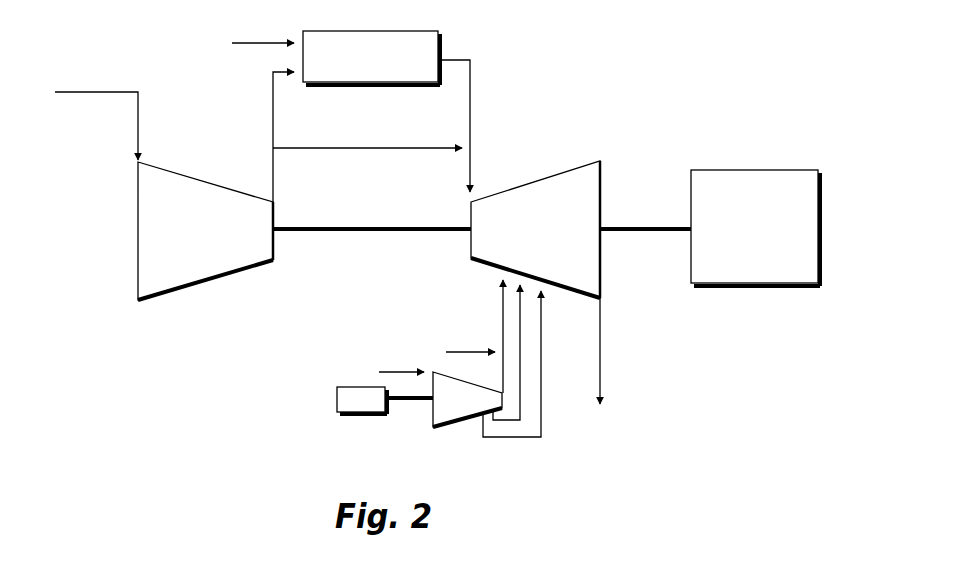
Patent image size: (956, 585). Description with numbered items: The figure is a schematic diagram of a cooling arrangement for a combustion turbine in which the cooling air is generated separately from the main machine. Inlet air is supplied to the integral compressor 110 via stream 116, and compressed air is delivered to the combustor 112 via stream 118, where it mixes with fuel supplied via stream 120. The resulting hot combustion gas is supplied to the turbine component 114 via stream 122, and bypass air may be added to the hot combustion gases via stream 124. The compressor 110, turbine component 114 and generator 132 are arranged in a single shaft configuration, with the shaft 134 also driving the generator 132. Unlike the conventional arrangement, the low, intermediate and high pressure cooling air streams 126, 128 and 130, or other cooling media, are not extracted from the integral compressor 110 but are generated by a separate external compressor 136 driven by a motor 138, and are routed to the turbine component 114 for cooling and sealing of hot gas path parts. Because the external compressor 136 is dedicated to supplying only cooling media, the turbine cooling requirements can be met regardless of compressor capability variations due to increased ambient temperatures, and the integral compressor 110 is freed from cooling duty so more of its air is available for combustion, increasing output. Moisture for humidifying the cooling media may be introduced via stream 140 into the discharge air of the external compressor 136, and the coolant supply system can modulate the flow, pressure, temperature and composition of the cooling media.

The compressor 110 is at (200, 185).
The combustor 112 is at (385, 31).
The turbine component 114 is at (537, 192).
The inlet air stream 116 is at (140, 109).
The compressed air stream 118 is at (273, 188).
The fuel stream 120 is at (263, 42).
The hot combustion gas stream 122 is at (470, 112).
The bypass air stream 124 is at (325, 147).
The low pressure cooling air stream 126 is at (540, 373).
The intermediate pressure cooling air stream 128 is at (520, 393).
The high pressure cooling air stream 130 is at (500, 322).
The generator 132 is at (745, 180).
The shaft 134 is at (645, 228).
The external compressor 136 is at (460, 412).
The motor 138 is at (352, 390).
The moisture introduction stream 140 is at (462, 348).